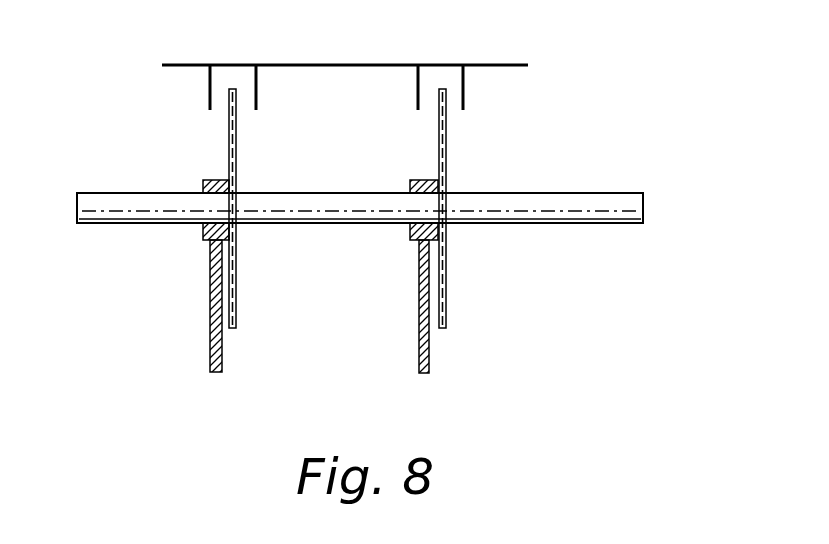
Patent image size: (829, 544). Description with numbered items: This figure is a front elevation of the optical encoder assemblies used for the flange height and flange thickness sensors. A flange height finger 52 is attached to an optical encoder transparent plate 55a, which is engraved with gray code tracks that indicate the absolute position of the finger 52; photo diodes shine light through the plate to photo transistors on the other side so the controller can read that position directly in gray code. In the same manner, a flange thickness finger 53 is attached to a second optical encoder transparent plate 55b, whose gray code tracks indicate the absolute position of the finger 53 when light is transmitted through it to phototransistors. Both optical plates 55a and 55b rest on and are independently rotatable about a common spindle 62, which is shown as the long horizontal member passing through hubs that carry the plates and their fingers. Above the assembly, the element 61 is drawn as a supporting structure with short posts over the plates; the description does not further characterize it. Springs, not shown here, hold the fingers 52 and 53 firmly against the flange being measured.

The finger 52 is at (430, 358).
The finger 53 is at (209, 346).
The optical encoder transparent plate 55a is at (447, 312).
The optical encoder transparent plate 55b is at (237, 305).
The support frame 61 is at (464, 97).
The spindle 62 is at (645, 207).